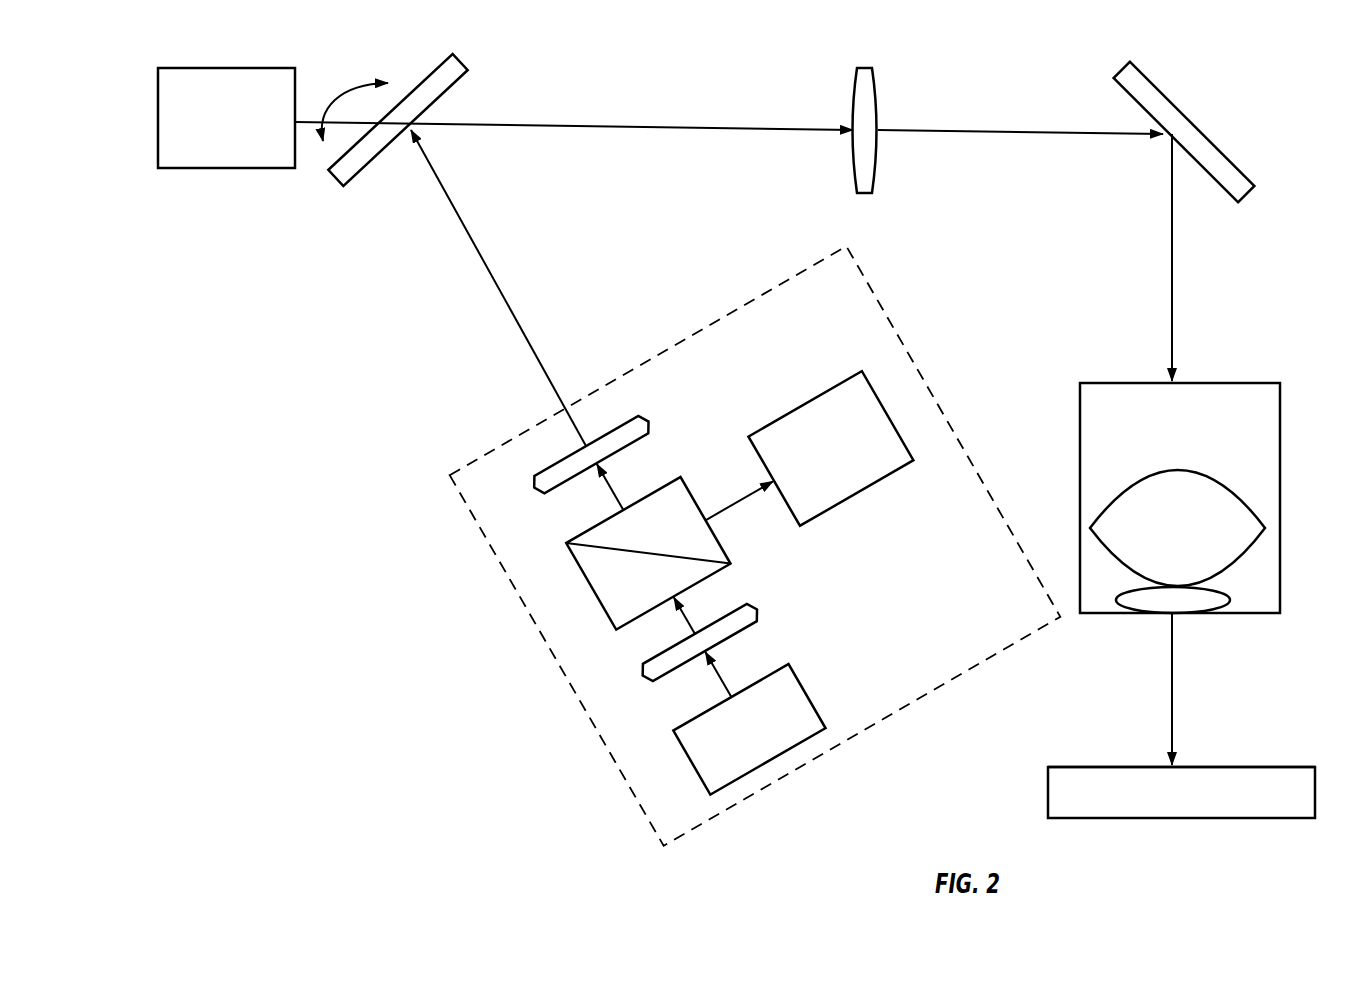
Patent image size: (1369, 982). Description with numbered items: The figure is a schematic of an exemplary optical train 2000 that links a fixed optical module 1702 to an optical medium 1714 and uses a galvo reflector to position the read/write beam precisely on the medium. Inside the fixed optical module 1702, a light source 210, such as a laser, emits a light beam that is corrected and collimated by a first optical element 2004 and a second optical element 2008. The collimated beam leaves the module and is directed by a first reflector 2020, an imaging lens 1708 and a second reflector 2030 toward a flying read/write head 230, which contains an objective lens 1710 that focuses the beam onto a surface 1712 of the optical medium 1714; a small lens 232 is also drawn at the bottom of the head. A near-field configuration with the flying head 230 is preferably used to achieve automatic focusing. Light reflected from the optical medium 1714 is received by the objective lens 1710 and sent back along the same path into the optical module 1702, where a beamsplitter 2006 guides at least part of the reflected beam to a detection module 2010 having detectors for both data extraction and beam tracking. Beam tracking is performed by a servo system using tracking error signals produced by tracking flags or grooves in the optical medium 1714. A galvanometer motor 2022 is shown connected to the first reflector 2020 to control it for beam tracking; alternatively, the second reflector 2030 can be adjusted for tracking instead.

The optical train 2000 is at (755, 445).
The galvanometer motor 2022 is at (250, 170).
The first reflector 2020 is at (413, 83).
The imaging lens 1708 is at (878, 93).
The second reflector 2030 is at (1163, 91).
The flying read/write head 230 is at (1198, 382).
The objective lens 1710 is at (1172, 470).
The solid immersion lens 232 is at (1232, 598).
The surface of the optical medium 1712 is at (1200, 765).
The optical medium 1714 is at (1048, 795).
The fixed optical module 1702 is at (902, 330).
The second optical element 2008 is at (645, 425).
The beamsplitter 2006 is at (648, 553).
The detection module 2010 is at (830, 448).
The first optical element 2004 is at (748, 608).
The light source 210 is at (809, 698).